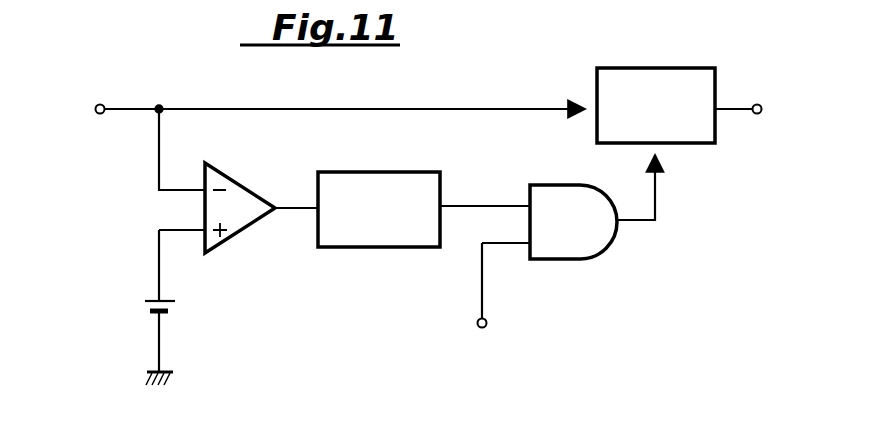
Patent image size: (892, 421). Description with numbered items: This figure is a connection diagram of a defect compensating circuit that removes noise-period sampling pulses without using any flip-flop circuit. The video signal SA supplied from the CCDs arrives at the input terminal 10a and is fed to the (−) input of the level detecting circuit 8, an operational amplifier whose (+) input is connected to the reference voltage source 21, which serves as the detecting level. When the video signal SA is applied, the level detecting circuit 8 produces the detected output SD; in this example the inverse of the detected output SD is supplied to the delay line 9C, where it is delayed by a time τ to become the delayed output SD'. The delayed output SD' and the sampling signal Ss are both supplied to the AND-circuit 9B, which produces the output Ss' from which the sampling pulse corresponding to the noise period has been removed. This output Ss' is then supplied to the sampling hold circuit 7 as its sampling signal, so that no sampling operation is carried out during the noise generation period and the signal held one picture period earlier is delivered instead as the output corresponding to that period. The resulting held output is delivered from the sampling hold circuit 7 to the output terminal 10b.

The input terminal 10a is at (100, 104).
The video signal SA is at (178, 112).
The level detecting circuit 8 is at (240, 235).
The detected output SD is at (286, 186).
The delay line 9C is at (398, 172).
The delayed inverse detected output SD' is at (490, 187).
The AND-circuit 9B is at (602, 252).
The sampling signal Ss is at (508, 308).
The AND-circuit output Ss' is at (686, 210).
The sampling hold circuit 7 is at (690, 68).
The output terminal 10b is at (757, 114).
The reference voltage source 21 is at (150, 306).